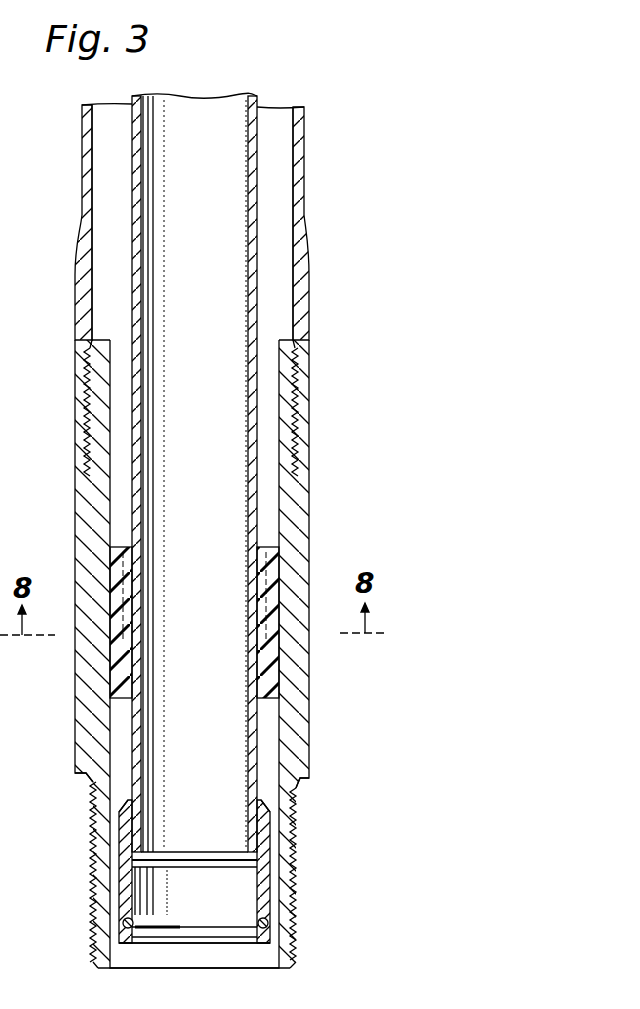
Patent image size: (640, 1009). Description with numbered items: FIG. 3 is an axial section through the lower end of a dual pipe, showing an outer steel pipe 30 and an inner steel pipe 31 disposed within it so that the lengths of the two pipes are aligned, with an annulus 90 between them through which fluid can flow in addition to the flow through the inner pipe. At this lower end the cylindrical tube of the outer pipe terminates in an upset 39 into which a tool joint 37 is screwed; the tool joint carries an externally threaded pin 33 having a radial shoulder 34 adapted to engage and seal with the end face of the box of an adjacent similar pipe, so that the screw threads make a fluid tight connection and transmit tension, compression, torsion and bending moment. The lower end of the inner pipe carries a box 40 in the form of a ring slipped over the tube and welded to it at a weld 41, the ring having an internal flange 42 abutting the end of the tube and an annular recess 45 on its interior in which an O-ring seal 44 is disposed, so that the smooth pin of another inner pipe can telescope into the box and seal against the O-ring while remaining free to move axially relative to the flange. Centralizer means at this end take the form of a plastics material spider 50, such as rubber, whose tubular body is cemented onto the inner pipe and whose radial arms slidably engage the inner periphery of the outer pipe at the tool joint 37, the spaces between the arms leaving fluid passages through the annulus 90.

The outer steel pipe 30 is at (298, 168).
The inner steel pipe 31 is at (258, 141).
The annulus 90 is at (275, 206).
The upset 39 is at (296, 398).
The tool joint 37 is at (300, 670).
The spider 50 is at (268, 565).
The weld 41 is at (262, 800).
The radial shoulder 34 is at (300, 787).
The internal flange 42 is at (250, 857).
The box 40 is at (275, 880).
The O-ring seal 44 is at (252, 924).
The externally threaded pin 33 is at (297, 915).
The annular recess 45 is at (265, 946).